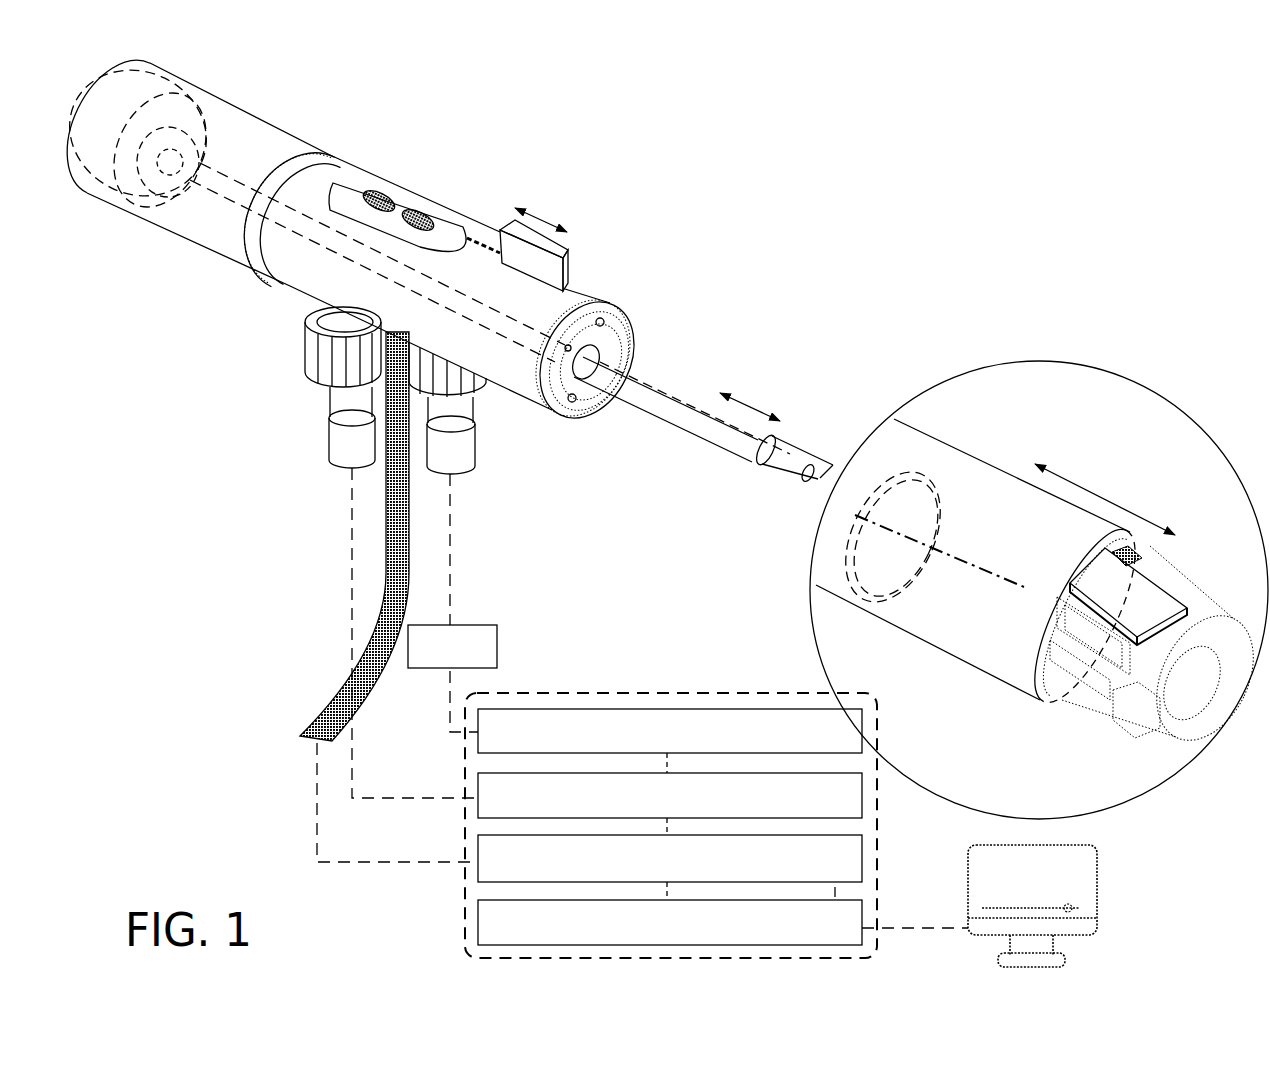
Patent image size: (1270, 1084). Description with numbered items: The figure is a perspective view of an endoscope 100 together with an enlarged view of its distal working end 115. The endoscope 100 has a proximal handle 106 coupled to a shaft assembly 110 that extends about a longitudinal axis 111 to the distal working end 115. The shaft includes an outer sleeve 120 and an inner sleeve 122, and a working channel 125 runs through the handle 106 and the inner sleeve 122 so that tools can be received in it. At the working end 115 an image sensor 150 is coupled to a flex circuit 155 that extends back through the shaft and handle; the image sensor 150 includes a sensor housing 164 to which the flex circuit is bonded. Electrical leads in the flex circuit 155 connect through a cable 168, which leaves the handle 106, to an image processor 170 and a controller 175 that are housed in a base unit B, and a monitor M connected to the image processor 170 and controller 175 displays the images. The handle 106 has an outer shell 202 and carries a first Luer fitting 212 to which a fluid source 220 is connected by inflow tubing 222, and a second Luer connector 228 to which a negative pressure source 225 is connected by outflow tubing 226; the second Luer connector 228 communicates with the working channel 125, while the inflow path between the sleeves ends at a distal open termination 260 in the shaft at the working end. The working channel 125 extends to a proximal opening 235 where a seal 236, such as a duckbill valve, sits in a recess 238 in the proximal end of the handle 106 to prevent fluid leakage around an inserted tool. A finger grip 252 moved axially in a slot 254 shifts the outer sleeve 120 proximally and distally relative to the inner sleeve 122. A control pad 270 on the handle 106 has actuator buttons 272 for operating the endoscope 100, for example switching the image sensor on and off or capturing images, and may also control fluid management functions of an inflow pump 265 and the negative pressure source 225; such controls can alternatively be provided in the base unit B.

The endoscope 100 is at (893, 157).
The proximal handle 106 is at (383, 127).
The shaft assembly 110 is at (704, 386).
The longitudinal axis 111 is at (990, 572).
The distal working end 115 is at (1180, 384).
The outer sleeve 120 is at (683, 410).
The inner sleeve 122 is at (780, 463).
The working channel 125 is at (323, 243).
The image sensor 150 is at (1177, 588).
The flex circuit 155 is at (812, 442).
The sensor housing 164 is at (1092, 637).
The cable 168 is at (379, 669).
The image processor 170 is at (670, 858).
The controller 175 is at (670, 922).
The outer shell 202 is at (633, 326).
The first Luer fitting 212 is at (462, 452).
The fluid source 220 is at (670, 731).
The inflow tubing 222 is at (451, 536).
The negative pressure source 225 is at (670, 795).
The outflow tubing 226 is at (351, 543).
The second Luer connector 228 is at (343, 435).
The proximal opening 235 is at (160, 167).
The seal 236 is at (187, 192).
The recess 238 is at (167, 93).
The finger grip 252 is at (572, 264).
The slot 254 is at (580, 296).
The distal open termination 260 is at (1132, 553).
The inflow pump 265 is at (452, 678).
The control pad 270 is at (403, 210).
The actuator buttons 272 is at (430, 218).
The base unit B is at (686, 692).
The monitor M is at (1080, 880).